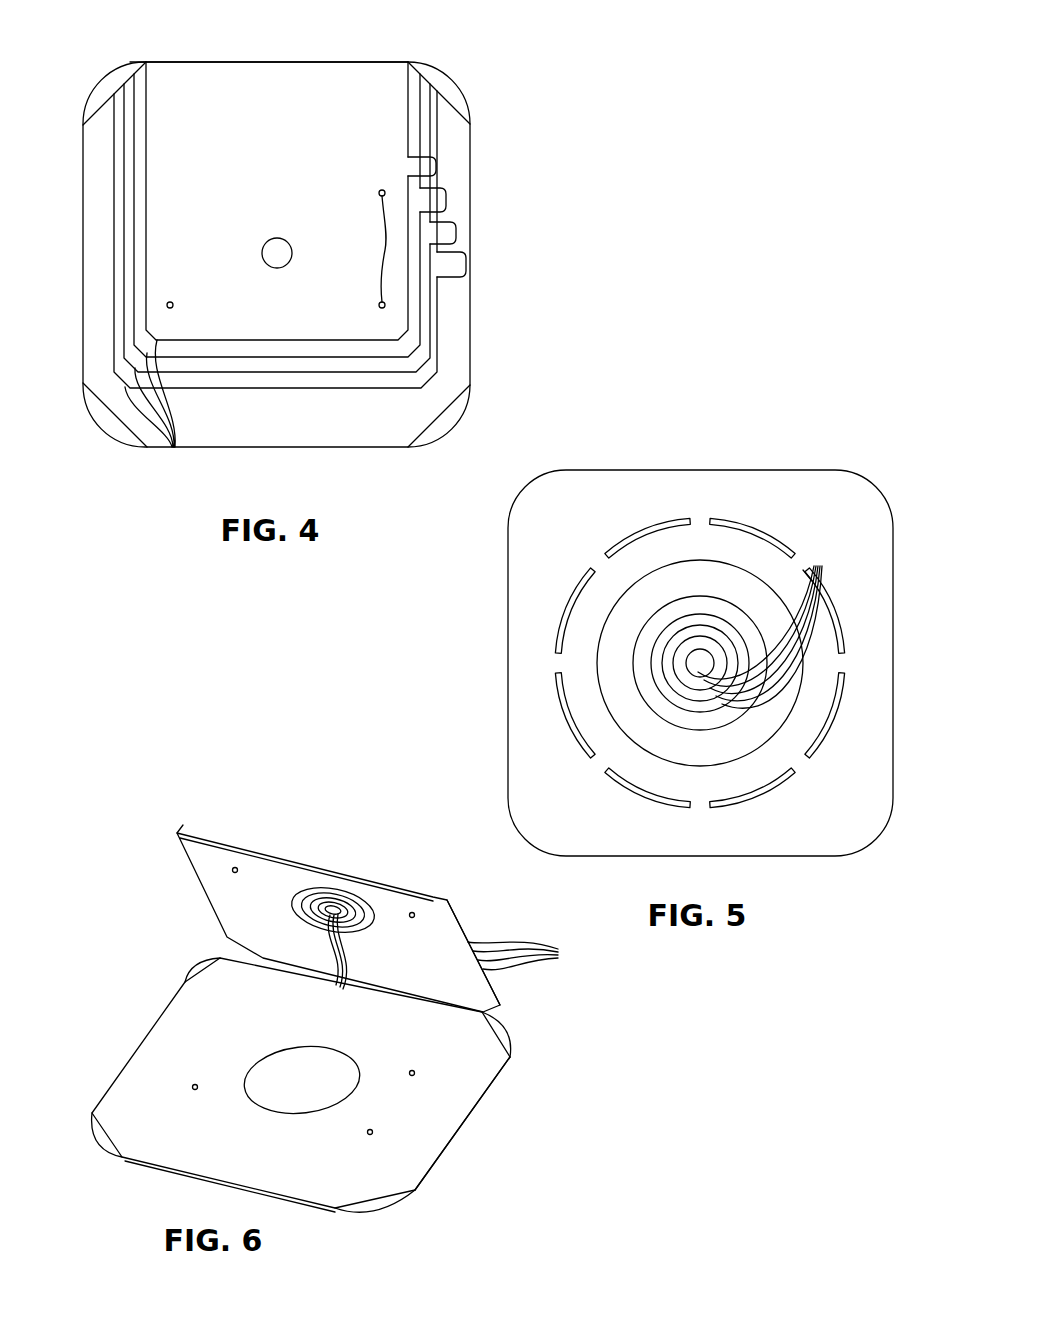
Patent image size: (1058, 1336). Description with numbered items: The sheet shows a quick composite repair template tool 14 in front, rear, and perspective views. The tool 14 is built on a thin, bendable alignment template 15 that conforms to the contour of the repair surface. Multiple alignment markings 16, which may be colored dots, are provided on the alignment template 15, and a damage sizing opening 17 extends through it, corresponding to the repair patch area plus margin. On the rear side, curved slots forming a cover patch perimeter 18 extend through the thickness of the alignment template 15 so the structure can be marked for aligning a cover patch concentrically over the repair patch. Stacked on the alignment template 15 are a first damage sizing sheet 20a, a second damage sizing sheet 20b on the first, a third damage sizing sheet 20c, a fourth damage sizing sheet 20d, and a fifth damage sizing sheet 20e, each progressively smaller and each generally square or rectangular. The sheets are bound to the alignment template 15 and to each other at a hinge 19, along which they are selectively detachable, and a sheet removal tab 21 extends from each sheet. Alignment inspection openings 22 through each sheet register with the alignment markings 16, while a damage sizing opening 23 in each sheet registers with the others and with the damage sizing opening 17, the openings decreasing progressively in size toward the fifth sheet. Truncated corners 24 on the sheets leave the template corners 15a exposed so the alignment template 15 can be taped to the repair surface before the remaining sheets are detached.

In FIG. 4, the quick composite repair template tool 14 is at (203, 57).
In FIG. 5, the quick composite repair template tool 14 is at (782, 462).
In FIG. 6, the quick composite repair template tool 14 is at (407, 873).
In FIG. 4, the alignment template 15 is at (407, 448).
In FIG. 5, the alignment template 15 is at (647, 858).
In FIG. 6, the alignment template 15 is at (483, 1102).
In FIG. 4, the template corners 15a is at (103, 93).
In FIG. 6, the template corners 15a is at (219, 963).
In FIG. 6, the alignment markings 16 is at (194, 1090).
In FIG. 5, the damage sizing opening 17 is at (786, 695).
In FIG. 6, the damage sizing opening 17 is at (318, 1103).
In FIG. 5, the cover patch perimeter 18 is at (661, 806).
In FIG. 4, the hinge 19 is at (352, 62).
In FIG. 6, the hinge 19 is at (447, 1008).
In FIG. 4, the first damage sizing sheet 20a is at (447, 402).
In FIG. 6, the first damage sizing sheet 20a is at (400, 1195).
In FIG. 4, the second damage sizing sheet 20b is at (232, 390).
In FIG. 6, the second damage sizing sheet 20b is at (456, 917).
In FIG. 4, the third damage sizing sheet 20c is at (283, 373).
In FIG. 4, the fourth damage sizing sheet 20d is at (338, 357).
In FIG. 4, the fifth damage sizing sheet 20e is at (403, 327).
In FIG. 4, the sheet removal tab 21 is at (440, 165).
In FIG. 6, the sheet removal tab 21 is at (564, 953).
In FIG. 4, the alignment inspection openings 22 is at (385, 250).
In FIG. 6, the alignment inspection openings 22 is at (235, 870).
In FIG. 4, the damage sizing opening 23 is at (268, 242).
In FIG. 5, the damage sizing opening 23 is at (820, 556).
In FIG. 6, the damage sizing opening 23 is at (333, 948).
In FIG. 4, the truncated corners 24 is at (173, 446).
In FIG. 6, the truncated corners 24 is at (183, 824).